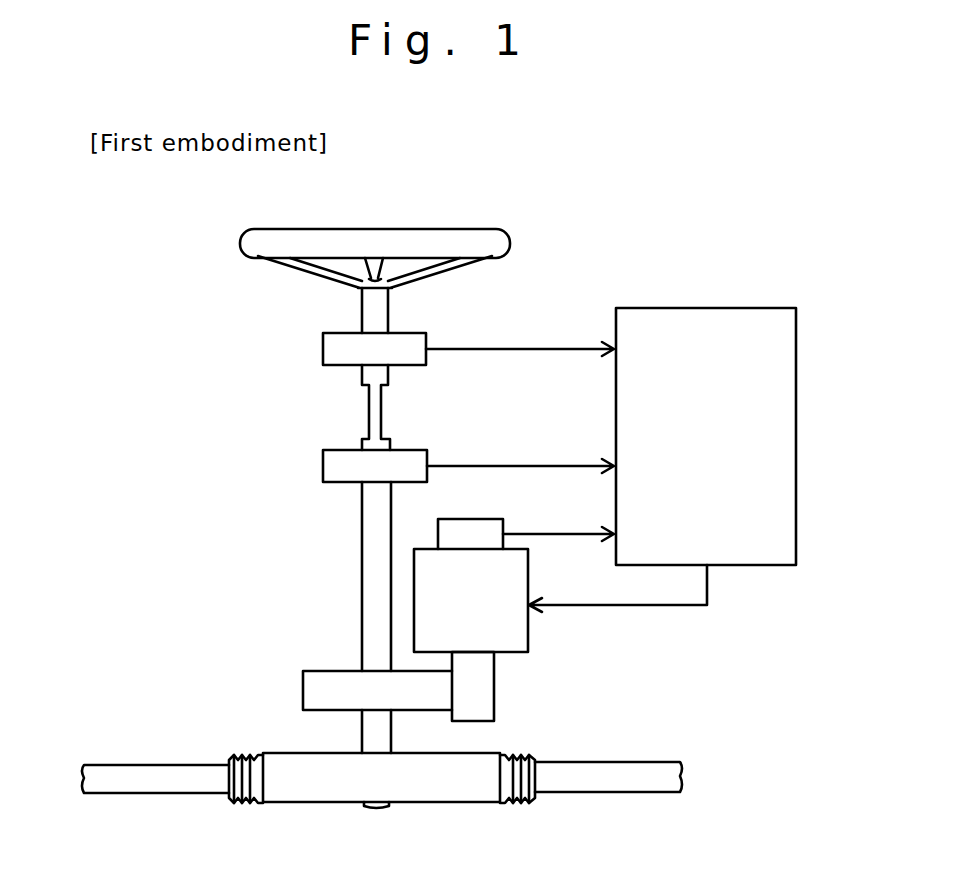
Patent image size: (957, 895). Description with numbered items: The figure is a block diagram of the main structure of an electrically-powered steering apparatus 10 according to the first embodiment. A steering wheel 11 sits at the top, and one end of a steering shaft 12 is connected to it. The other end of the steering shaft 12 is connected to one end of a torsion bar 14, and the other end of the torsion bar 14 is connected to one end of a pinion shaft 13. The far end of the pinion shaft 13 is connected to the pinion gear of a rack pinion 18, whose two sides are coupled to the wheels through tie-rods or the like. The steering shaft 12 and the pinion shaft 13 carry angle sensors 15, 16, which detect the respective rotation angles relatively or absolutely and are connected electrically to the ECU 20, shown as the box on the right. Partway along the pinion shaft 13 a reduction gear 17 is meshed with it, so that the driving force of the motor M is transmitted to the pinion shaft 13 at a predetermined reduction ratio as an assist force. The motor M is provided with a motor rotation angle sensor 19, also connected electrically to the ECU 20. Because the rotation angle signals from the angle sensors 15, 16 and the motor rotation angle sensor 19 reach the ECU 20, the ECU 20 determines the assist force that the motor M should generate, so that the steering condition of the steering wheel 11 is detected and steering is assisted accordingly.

The electrically-powered steering apparatus 10 is at (153, 272).
The steering wheel 11 is at (512, 243).
The steering shaft 12 is at (380, 313).
The pinion shaft 13 is at (362, 574).
The torsion bar 14 is at (365, 409).
The angle sensor 15 is at (323, 351).
The angle sensor 16 is at (323, 467).
The reduction gear 17 is at (303, 690).
The rack pinion 18 is at (318, 790).
The motor rotation angle sensor 19 is at (472, 519).
The ECU 20 is at (708, 308).
The motor M is at (528, 642).